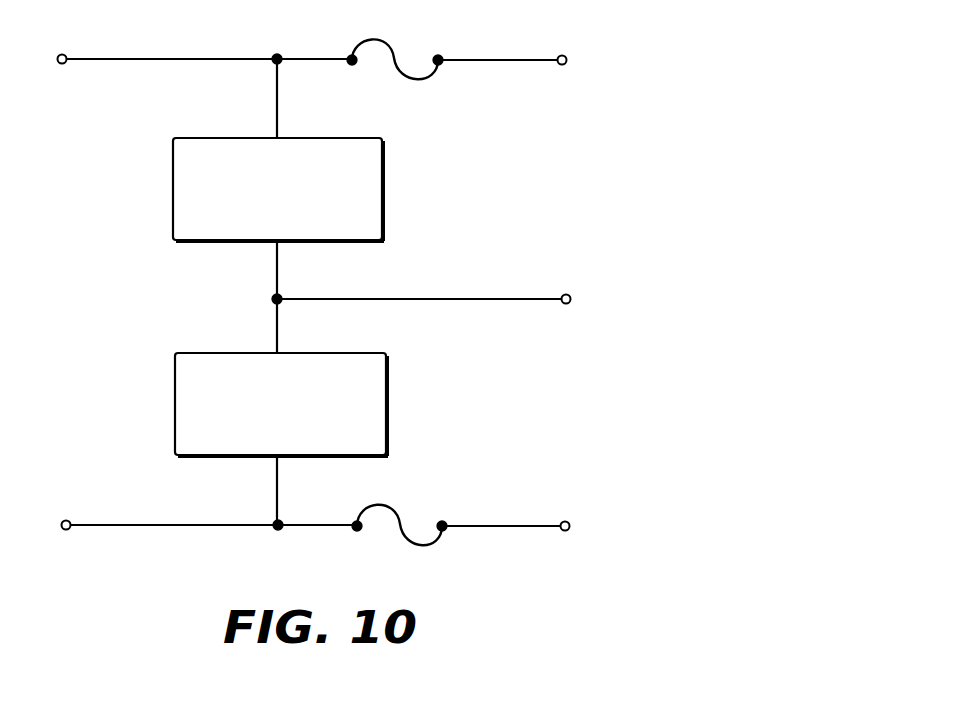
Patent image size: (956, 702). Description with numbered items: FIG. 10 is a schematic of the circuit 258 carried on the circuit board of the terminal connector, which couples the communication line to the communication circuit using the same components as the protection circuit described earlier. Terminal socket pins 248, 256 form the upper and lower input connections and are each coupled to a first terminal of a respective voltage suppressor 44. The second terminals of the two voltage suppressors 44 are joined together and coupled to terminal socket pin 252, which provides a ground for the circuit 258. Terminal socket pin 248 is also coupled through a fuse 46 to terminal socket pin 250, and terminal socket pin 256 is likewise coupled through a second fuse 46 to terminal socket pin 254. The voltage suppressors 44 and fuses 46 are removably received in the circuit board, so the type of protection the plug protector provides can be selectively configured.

The voltage suppressor 44 is at (383, 208).
The fuse 46 is at (400, 56).
The terminal socket pin 248 is at (66, 54).
The terminal socket pin 250 is at (566, 65).
The terminal socket pin 252 is at (570, 294).
The terminal socket pin 254 is at (569, 520).
The terminal socket pin 256 is at (64, 519).
The circuit 258 is at (147, 552).